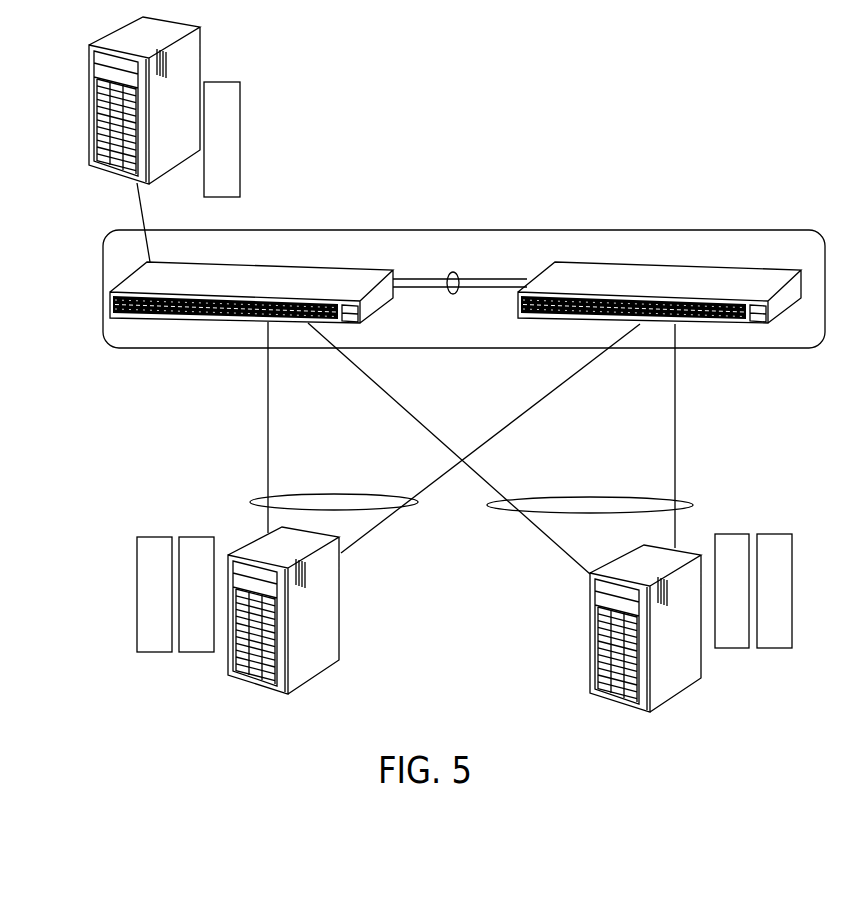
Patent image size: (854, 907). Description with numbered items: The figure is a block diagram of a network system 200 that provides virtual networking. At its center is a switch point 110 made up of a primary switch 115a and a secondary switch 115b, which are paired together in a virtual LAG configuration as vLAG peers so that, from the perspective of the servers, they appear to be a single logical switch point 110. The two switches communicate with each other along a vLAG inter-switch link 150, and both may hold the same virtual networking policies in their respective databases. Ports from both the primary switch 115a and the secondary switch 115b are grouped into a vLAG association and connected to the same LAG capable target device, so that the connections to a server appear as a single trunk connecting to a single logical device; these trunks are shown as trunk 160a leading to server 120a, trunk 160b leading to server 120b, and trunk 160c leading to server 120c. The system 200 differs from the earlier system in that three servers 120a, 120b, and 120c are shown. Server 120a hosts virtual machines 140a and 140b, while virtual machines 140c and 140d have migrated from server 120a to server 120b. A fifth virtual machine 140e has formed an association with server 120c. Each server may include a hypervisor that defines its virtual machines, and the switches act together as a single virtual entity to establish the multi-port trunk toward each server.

The network system 200 is at (662, 192).
The switch point 110 is at (570, 222).
The primary switch 115a is at (318, 262).
The secondary switch 115b is at (542, 323).
The vLAG inter-switch link 150 is at (458, 275).
The server 120a is at (310, 668).
The server 120b is at (677, 692).
The server 120c is at (89, 78).
The virtual machine 140a is at (152, 652).
The virtual machine 140b is at (194, 652).
The virtual machine 140c is at (732, 648).
The virtual machine 140d is at (774, 648).
The fifth virtual machine 140e is at (240, 118).
The trunk 160a is at (332, 492).
The trunk 160b is at (590, 495).
The trunk 160c is at (140, 206).